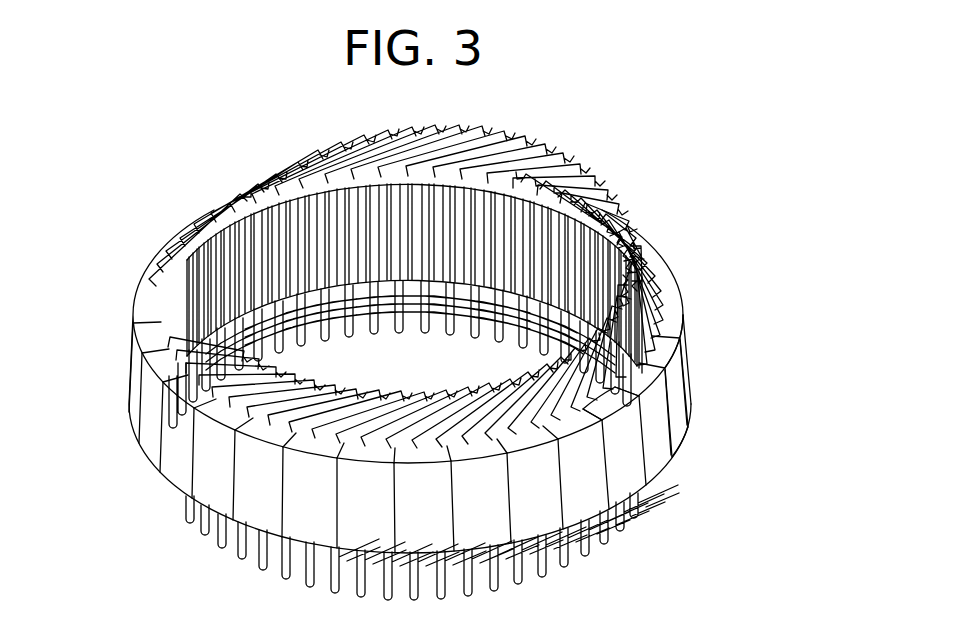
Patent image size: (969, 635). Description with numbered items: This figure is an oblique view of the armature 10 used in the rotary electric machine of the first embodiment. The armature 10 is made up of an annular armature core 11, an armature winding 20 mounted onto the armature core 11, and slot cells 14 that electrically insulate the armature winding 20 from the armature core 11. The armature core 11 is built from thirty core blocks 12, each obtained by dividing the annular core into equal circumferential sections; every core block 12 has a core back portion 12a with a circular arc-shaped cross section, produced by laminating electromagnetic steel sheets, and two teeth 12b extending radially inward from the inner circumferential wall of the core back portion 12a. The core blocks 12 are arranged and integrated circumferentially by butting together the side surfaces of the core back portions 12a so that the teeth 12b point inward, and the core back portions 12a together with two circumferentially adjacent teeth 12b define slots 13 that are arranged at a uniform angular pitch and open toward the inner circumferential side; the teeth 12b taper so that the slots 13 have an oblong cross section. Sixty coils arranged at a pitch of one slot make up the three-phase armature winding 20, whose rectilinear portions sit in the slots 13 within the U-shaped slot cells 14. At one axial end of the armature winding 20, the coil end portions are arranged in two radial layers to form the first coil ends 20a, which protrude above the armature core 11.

The armature 10 is at (134, 100).
The armature core 11 is at (670, 250).
The core block 12 is at (676, 288).
The core back portion 12a is at (670, 316).
The teeth 12b is at (545, 215).
The slots 13 is at (677, 343).
The slot cells 14 is at (625, 369).
The armature winding 20 is at (205, 218).
The first coil ends 20a is at (557, 165).